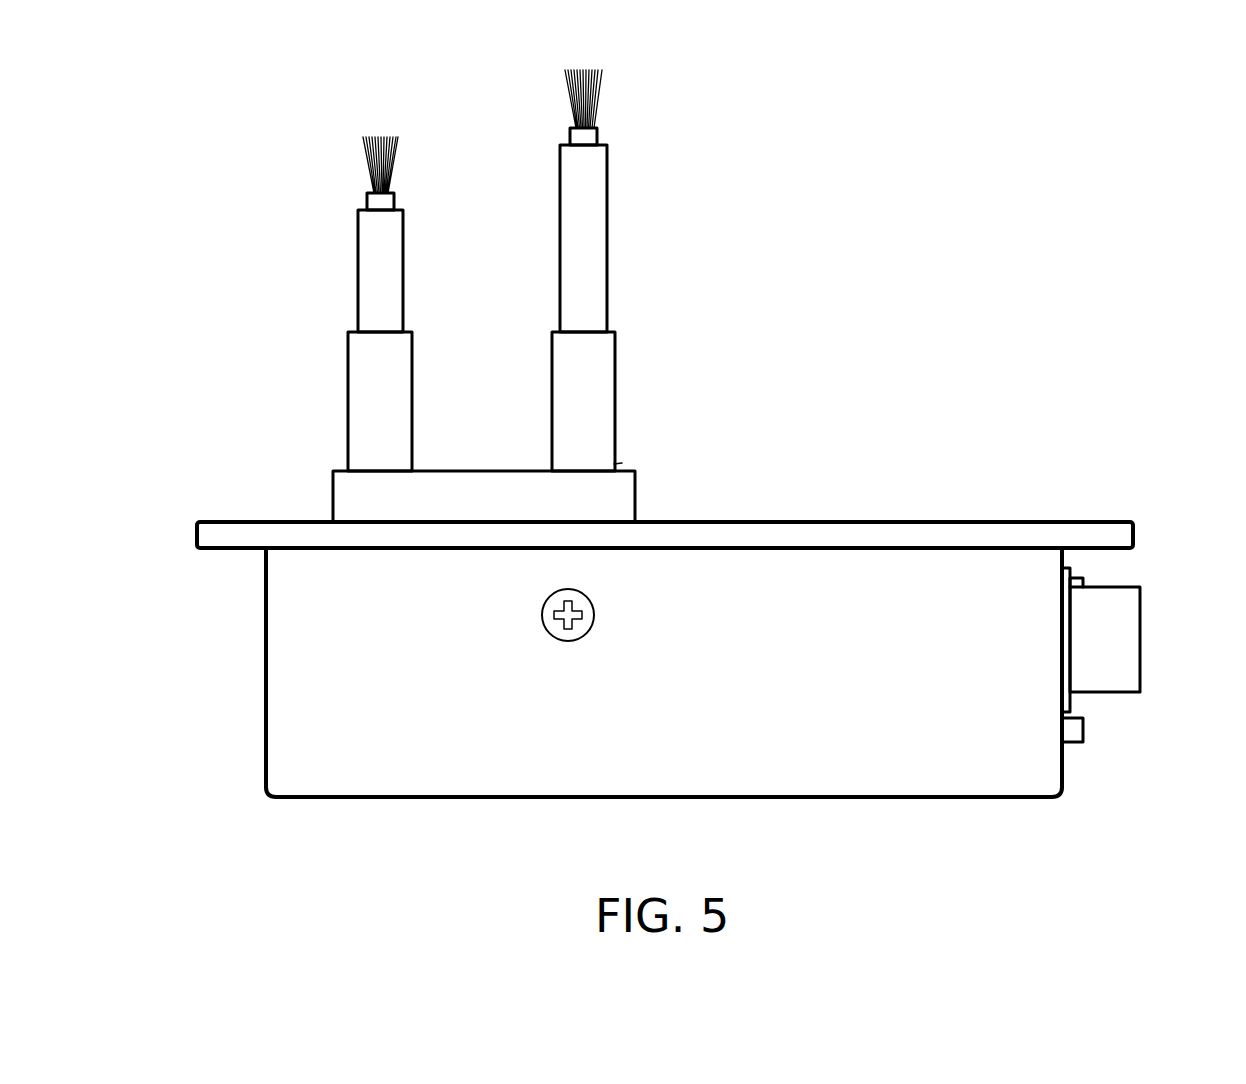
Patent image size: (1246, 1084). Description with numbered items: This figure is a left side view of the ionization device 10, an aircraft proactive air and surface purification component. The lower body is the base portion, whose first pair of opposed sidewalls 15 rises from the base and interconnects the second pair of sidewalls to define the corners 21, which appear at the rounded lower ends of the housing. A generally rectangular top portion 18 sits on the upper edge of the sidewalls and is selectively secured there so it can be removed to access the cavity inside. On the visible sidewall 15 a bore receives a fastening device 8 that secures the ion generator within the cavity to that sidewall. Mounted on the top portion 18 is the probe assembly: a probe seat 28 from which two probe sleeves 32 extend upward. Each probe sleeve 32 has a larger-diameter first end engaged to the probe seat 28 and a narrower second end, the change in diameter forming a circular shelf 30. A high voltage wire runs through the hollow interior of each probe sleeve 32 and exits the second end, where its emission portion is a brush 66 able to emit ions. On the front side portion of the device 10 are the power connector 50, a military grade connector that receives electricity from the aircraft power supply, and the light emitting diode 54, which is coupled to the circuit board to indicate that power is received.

The screw 8 is at (595, 615).
The ionization device 10 is at (945, 240).
The first pair of opposed sidewalls 15 is at (497, 752).
The top portion 18 is at (916, 532).
The corners 21 is at (263, 730).
The probe seat 28 is at (342, 499).
The circular shelf 30 is at (348, 332).
The probe sleeve 32 is at (592, 202).
The power connector 50 is at (1128, 608).
The light emitting diode 54 is at (1083, 730).
The brush 66 is at (595, 100).